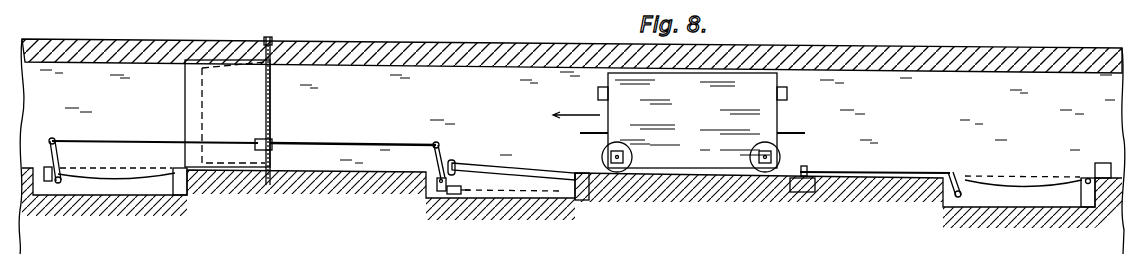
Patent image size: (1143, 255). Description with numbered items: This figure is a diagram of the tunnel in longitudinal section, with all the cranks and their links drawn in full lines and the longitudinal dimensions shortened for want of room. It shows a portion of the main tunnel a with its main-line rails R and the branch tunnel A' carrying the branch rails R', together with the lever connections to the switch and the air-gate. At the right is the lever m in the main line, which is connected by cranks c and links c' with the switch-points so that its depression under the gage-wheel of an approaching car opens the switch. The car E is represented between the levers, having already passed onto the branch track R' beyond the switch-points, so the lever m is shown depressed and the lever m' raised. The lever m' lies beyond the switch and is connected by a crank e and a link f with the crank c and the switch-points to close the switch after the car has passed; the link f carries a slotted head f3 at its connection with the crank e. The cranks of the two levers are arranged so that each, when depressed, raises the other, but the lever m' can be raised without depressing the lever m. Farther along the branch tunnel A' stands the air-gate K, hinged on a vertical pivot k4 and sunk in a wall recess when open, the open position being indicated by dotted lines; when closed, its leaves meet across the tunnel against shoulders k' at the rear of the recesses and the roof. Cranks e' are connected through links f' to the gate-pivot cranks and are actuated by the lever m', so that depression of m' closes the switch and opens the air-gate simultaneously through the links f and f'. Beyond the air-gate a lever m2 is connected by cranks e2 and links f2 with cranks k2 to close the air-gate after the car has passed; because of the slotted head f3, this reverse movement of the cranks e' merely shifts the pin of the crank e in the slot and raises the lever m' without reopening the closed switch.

The main tunnel a is at (572, 146).
The branch tunnel A' is at (405, 103).
The air-gate K is at (271, 106).
The shoulder k' is at (303, 102).
The pivot of the air-gate k4 is at (273, 41).
The crank k2 is at (258, 144).
The link f2 is at (136, 141).
The link f' is at (353, 142).
The crank e2 is at (60, 155).
The lever m2 is at (134, 176).
The rails of the branch tunnel R' is at (326, 162).
The crank e' is at (449, 156).
The crank e is at (424, 202).
The slotted head f3 is at (454, 195).
The lever m' is at (511, 167).
The car E is at (679, 122).
The link f is at (651, 203).
The crank c is at (855, 197).
The link c' is at (862, 195).
The lever m is at (1023, 167).
The main-line rails R is at (1099, 166).